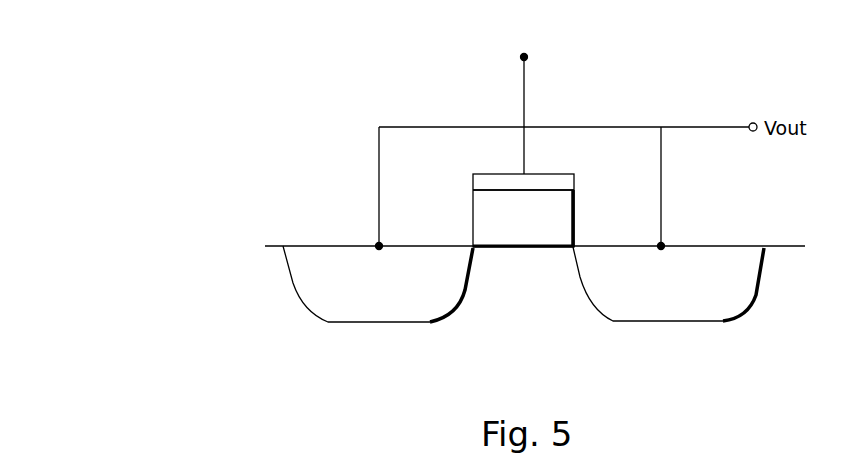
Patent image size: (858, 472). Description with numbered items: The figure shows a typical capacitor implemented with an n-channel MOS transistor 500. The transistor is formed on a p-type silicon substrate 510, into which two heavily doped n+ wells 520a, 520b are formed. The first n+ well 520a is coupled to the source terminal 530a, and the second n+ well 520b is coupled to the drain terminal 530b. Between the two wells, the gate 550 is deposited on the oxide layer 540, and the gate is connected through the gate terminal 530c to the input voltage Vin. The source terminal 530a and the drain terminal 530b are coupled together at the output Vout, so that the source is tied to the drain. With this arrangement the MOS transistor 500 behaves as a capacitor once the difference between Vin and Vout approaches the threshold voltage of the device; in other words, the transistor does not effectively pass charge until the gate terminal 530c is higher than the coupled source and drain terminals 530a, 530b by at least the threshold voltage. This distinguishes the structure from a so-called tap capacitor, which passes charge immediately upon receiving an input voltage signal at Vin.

The n-channel MOS transistor 500 is at (309, 102).
The p-type silicon substrate 510 is at (533, 370).
The heavily doped n+ well 520a is at (403, 316).
The heavily doped n+ well 520b is at (692, 314).
The source terminal 530a is at (378, 245).
The drain terminal 530b is at (662, 245).
The gate terminal 530c is at (522, 173).
The oxide layer 540 is at (547, 226).
The gate 550 is at (572, 182).